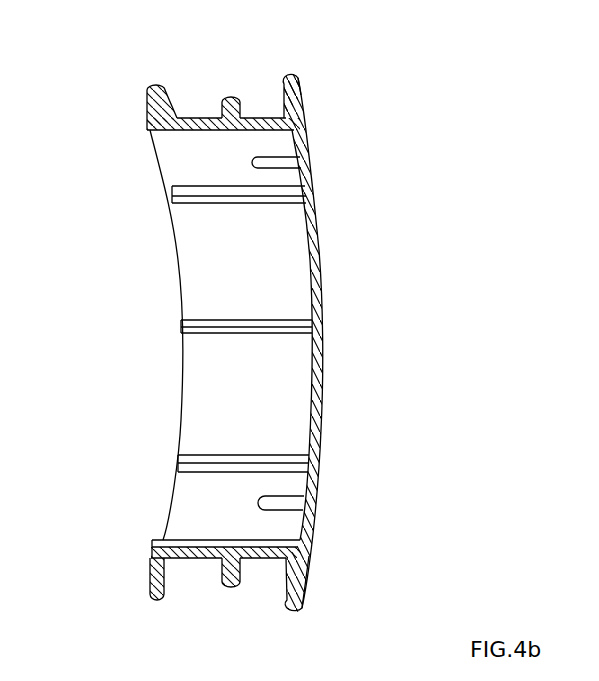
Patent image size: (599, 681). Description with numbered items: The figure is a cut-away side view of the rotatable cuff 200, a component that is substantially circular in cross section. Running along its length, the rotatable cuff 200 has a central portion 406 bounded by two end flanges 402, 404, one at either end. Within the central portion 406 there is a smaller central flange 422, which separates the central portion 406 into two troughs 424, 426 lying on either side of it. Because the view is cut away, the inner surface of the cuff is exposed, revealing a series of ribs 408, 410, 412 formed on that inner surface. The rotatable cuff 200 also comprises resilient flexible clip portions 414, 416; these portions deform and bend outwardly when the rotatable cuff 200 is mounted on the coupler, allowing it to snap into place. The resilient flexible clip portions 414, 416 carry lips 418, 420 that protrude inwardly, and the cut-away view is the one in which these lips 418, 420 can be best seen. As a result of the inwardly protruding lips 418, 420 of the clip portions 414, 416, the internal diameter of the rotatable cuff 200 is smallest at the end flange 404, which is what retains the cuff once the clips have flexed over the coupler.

The rotatable cuff 200 is at (136, 68).
The end flange 402 is at (153, 94).
The end flange 404 is at (295, 82).
The central portion 406 is at (228, 77).
The rib 408 is at (283, 330).
The rib 410 is at (283, 195).
The rib 412 is at (275, 461).
The resilient flexible clip portion 414 is at (343, 578).
The resilient flexible clip portion 416 is at (361, 139).
The lip 418 is at (310, 160).
The lip 420 is at (308, 513).
The central flange 422 is at (230, 584).
The trough 424 is at (197, 573).
The trough 426 is at (263, 574).